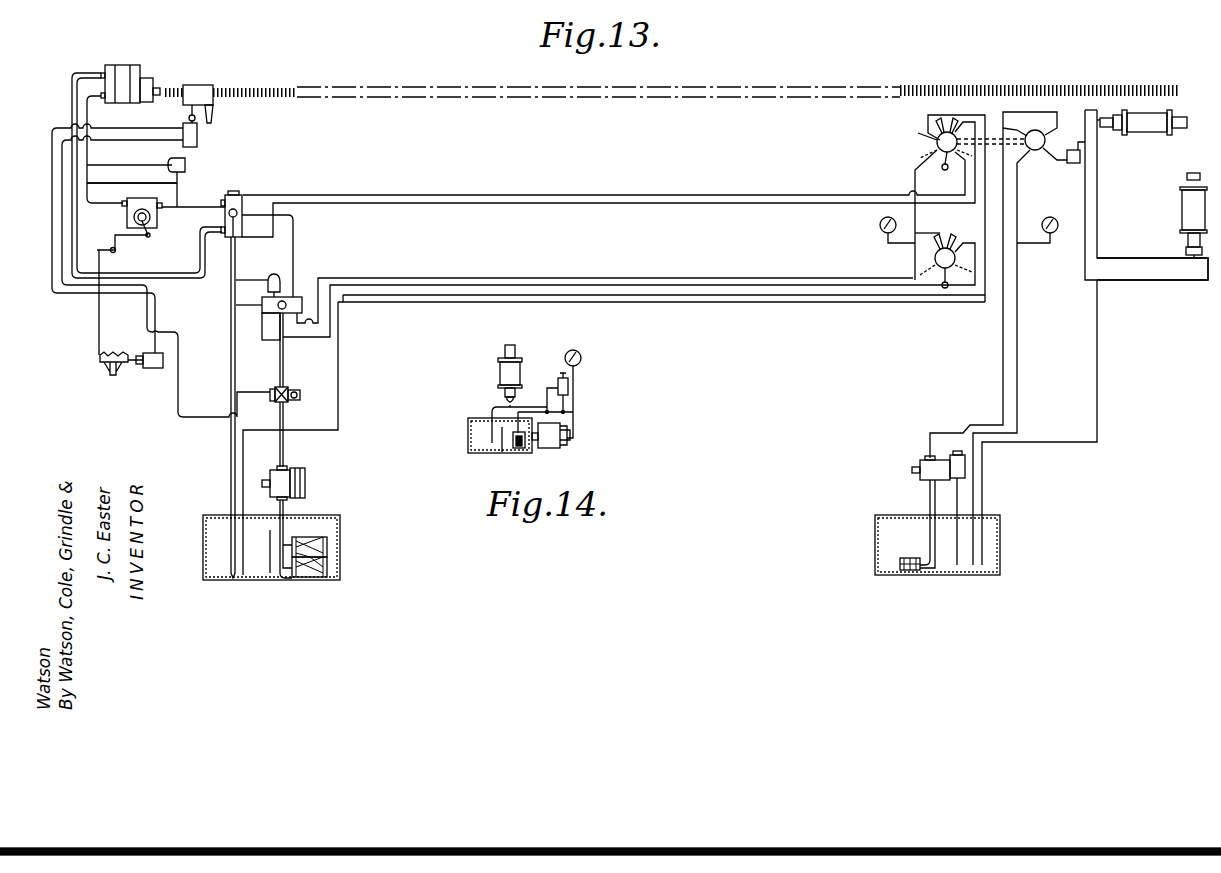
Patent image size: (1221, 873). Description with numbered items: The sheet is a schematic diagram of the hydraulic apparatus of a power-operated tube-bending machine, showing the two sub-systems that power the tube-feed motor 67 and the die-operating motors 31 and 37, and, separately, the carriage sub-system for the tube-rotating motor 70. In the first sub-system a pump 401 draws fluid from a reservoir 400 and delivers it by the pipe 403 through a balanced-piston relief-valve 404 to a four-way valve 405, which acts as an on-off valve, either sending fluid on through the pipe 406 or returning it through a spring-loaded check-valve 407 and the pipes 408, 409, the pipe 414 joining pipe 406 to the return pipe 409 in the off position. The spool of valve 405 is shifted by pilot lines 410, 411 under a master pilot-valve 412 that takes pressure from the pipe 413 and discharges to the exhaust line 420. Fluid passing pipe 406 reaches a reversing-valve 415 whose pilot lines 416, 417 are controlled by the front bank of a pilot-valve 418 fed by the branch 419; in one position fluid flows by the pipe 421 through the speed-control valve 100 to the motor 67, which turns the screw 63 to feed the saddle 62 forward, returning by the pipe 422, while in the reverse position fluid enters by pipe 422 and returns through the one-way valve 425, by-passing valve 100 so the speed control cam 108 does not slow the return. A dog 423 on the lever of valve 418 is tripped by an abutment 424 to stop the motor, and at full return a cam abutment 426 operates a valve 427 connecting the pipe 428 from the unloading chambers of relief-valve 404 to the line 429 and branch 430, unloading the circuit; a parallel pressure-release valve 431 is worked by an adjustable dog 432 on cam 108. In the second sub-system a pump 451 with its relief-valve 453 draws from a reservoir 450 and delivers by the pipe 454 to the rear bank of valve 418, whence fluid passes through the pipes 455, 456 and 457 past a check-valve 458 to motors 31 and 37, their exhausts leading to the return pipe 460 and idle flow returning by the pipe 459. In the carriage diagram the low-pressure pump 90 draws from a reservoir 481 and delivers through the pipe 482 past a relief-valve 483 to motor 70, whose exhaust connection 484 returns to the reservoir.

In FIG. 13, the die-operating motor 31 is at (1181, 211).
In FIG. 13, the die-operating motor 37 is at (1145, 135).
In FIG. 13, the saddle 62 is at (200, 85).
In FIG. 13, the screw 63 is at (270, 86).
In FIG. 13, the tube-feed motor 67 is at (132, 70).
In FIG. 14, the tube-rotating motor 70 is at (498, 368).
In FIG. 14, the low-pressure pump 90 is at (552, 449).
In FIG. 13, the speed-control valve 100 is at (158, 226).
In FIG. 13, the speed control cam 108 is at (122, 348).
In FIG. 13, the reservoir 400 is at (340, 550).
In FIG. 13, the pump 401 is at (305, 483).
In FIG. 13, the pipe 403 is at (280, 365).
In FIG. 13, the relief-valve 404 is at (275, 401).
In FIG. 13, the four-way valve 405 is at (298, 296).
In FIG. 13, the pipe 406 is at (296, 234).
In FIG. 13, the spring-loaded check-valve 407 is at (275, 274).
In FIG. 13, the pipe 408 is at (244, 278).
In FIG. 13, the return pipe 409 is at (231, 460).
In FIG. 13, the pilot circuit line 410 is at (262, 320).
In FIG. 13, the pilot circuit line 411 is at (305, 323).
In FIG. 13, the master pilot-valve 412 is at (940, 240).
In FIG. 13, the pipe 413 is at (575, 273).
In FIG. 13, the pipe 414 is at (245, 303).
In FIG. 13, the reversing-valve 415 is at (235, 193).
In FIG. 13, the pilot circuit line 416 is at (265, 240).
In FIG. 13, the pilot circuit line 417 is at (258, 195).
In FIG. 13, the pilot-valve 418 is at (1055, 138).
In FIG. 13, the branch 419 is at (913, 180).
In FIG. 13, the exhaust line 420 is at (583, 303).
In FIG. 13, the pipe 421 is at (92, 115).
In FIG. 13, the pipe 422 is at (90, 75).
In FIG. 13, the dog 423 is at (942, 125).
In FIG. 13, the abutment 424 is at (212, 108).
In FIG. 13, the one-way valve 425 is at (186, 164).
In FIG. 13, the cam abutment 426 is at (188, 118).
In FIG. 13, the valve 427 is at (198, 136).
In FIG. 13, the pipe 428 is at (150, 128).
In FIG. 13, the line 429 is at (152, 140).
In FIG. 13, the branch 430 is at (146, 183).
In FIG. 13, the pressure-release valve 431 is at (152, 370).
In FIG. 13, the dog 432 is at (130, 368).
In FIG. 13, the reservoir 450 is at (875, 547).
In FIG. 13, the pump 451 is at (923, 477).
In FIG. 13, the relief-valve 453 is at (963, 460).
In FIG. 13, the pipe 454 is at (1020, 200).
In FIG. 13, the pipe 455 is at (1045, 158).
In FIG. 13, the pipe 456 is at (1158, 281).
In FIG. 13, the pipe 457 is at (1085, 110).
In FIG. 13, the check-valve 458 is at (1068, 164).
In FIG. 13, the pipe 459 is at (992, 325).
In FIG. 13, the return pipe 460 is at (1098, 198).
In FIG. 14, the reservoir 481 is at (468, 436).
In FIG. 14, the pipe 482 is at (527, 405).
In FIG. 14, the relief-valve 483 is at (561, 378).
In FIG. 14, the exhaust connection 484 is at (492, 407).